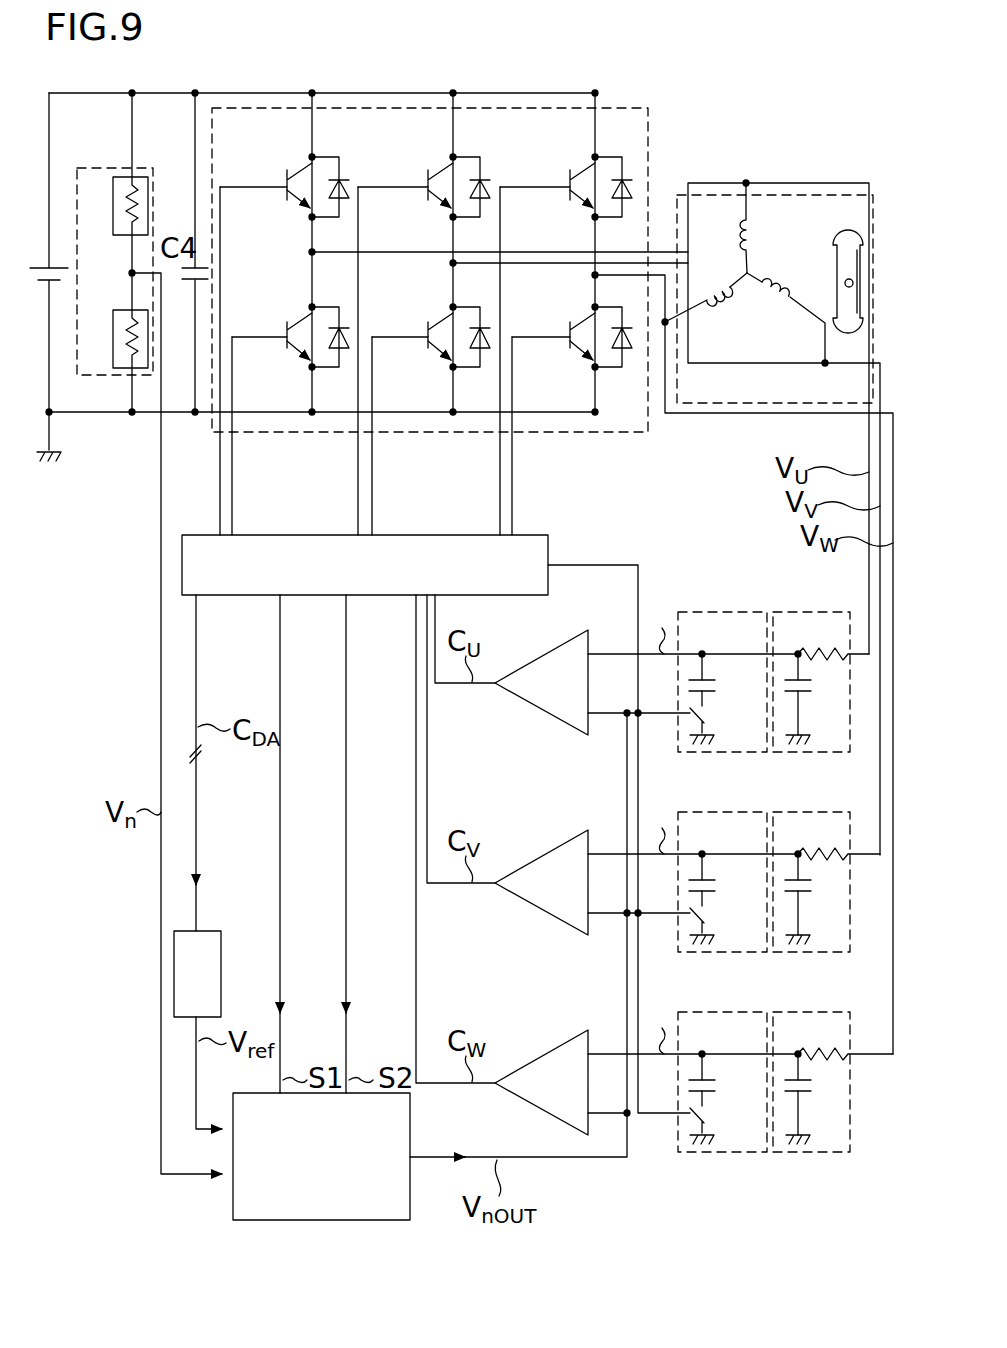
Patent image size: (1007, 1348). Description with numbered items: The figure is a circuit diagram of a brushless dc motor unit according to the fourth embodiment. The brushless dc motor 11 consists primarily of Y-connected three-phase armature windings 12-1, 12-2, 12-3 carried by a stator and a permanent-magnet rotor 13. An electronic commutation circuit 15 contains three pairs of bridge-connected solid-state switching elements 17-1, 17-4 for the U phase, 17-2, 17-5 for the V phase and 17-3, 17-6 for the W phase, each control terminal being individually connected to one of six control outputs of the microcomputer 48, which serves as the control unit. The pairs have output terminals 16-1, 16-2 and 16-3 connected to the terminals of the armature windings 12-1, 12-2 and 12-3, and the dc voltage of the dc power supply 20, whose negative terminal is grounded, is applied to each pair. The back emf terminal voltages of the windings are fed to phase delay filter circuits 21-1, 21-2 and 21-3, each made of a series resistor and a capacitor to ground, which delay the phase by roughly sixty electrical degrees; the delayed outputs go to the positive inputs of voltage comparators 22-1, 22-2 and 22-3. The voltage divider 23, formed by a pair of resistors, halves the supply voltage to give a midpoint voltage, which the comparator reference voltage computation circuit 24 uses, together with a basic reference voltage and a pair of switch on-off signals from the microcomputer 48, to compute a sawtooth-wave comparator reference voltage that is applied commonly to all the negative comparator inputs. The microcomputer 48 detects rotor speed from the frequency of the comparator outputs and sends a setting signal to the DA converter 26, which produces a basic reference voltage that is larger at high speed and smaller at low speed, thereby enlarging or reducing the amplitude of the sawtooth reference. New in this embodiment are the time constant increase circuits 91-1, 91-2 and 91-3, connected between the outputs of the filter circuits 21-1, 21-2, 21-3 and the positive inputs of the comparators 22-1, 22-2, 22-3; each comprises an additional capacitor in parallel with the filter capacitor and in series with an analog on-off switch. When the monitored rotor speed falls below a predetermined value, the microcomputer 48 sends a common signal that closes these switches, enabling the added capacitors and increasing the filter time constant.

The brushless dc motor 11 is at (838, 194).
The armature winding 12-1 is at (736, 232).
The armature winding 12-2 is at (778, 302).
The armature winding 12-3 is at (724, 304).
The permanent-magnet rotor 13 is at (837, 276).
The electronic commutation circuit 15 is at (628, 108).
The output terminal 16-1 is at (308, 255).
The output terminal 16-2 is at (452, 264).
The output terminal 16-3 is at (594, 276).
The switching element 17-1 is at (298, 198).
The switching element 17-2 is at (438, 198).
The switching element 17-3 is at (580, 198).
The switching element 17-4 is at (298, 348).
The switching element 17-5 is at (438, 348).
The switching element 17-6 is at (580, 348).
The dc power supply 20 is at (35, 286).
The phase delay filter circuit 21-1 is at (792, 752).
The phase delay filter circuit 21-2 is at (792, 952).
The phase delay filter circuit 21-3 is at (792, 1152).
The voltage comparator 22-1 is at (548, 653).
The voltage comparator 22-2 is at (548, 853).
The voltage comparator 22-3 is at (548, 1053).
The voltage divider 23 is at (97, 168).
The comparator reference voltage computation circuit 24 is at (233, 1200).
The DA converter 26 is at (215, 931).
The microcomputer 48 is at (546, 535).
The time constant increase circuit 91-1 is at (696, 612).
The time constant increase circuit 91-2 is at (696, 812).
The time constant increase circuit 91-3 is at (696, 1012).